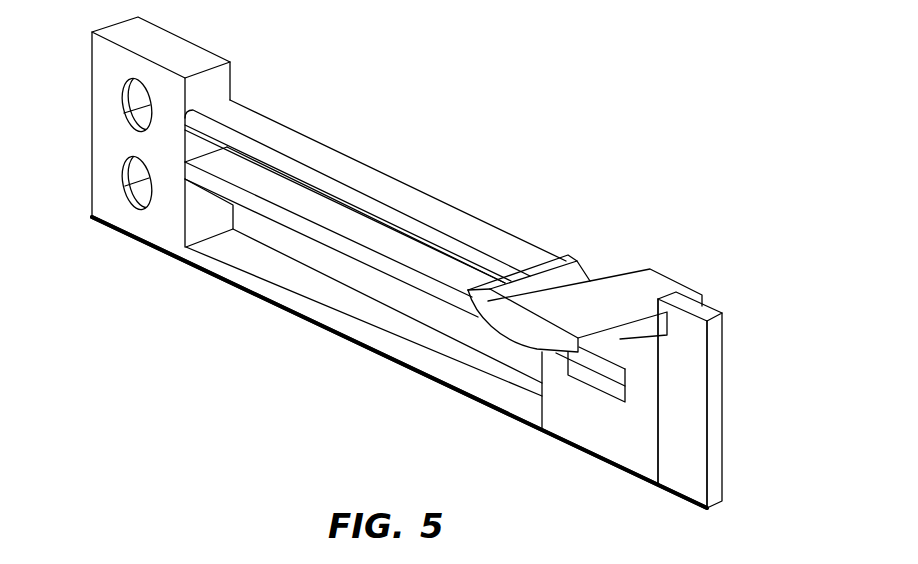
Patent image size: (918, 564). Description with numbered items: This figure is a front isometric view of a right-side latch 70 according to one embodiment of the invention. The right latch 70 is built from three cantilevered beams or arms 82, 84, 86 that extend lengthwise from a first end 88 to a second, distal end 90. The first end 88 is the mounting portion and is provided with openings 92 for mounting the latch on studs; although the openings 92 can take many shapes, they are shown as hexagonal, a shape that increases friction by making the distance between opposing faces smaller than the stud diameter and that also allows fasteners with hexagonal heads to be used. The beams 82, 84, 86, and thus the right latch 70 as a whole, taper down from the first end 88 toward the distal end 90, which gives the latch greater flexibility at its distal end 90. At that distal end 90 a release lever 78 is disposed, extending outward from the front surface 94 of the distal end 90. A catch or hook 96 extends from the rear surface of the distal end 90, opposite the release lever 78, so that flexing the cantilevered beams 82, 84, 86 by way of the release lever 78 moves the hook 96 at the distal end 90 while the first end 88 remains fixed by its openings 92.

The right latch 70 is at (645, 480).
The release lever 78 is at (550, 352).
The cantilevered beam 82 is at (330, 148).
The cantilevered beam 84 is at (310, 233).
The cantilevered beam 86 is at (330, 332).
The first end 88 is at (205, 50).
The distal end 90 is at (726, 380).
The openings 92 is at (124, 104).
The front surface 94 is at (689, 409).
The hook 96 is at (703, 300).